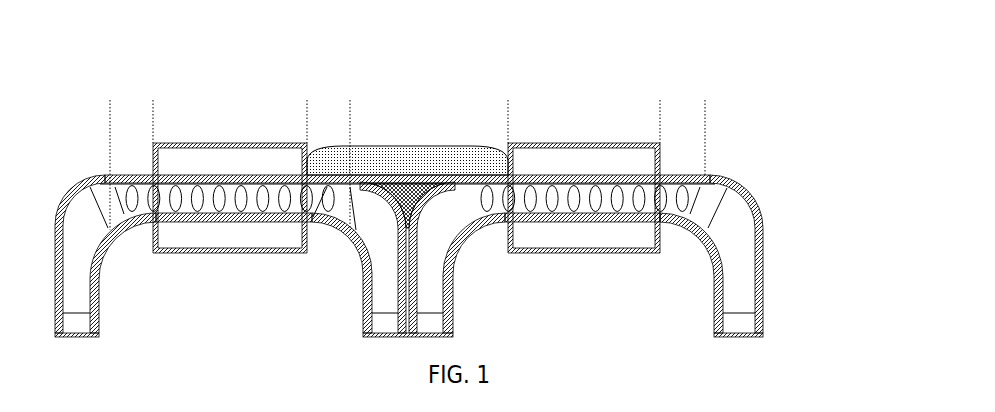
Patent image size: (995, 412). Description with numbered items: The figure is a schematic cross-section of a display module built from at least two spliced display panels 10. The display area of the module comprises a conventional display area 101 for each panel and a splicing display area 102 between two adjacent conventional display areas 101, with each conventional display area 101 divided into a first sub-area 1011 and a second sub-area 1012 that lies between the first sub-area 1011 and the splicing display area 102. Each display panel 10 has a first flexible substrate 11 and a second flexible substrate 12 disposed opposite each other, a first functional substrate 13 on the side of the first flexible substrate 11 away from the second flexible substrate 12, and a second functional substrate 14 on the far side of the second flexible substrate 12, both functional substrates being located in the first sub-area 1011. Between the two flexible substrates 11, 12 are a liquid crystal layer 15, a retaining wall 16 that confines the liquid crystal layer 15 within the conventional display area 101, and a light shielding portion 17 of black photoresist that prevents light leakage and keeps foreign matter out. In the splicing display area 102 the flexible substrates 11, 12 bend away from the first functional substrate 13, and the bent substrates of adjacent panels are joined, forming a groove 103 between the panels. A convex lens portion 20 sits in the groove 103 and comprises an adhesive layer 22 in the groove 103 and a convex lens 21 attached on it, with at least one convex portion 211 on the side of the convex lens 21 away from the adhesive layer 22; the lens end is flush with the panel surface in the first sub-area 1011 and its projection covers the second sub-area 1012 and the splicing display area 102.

The display panel 10 is at (830, 105).
The first flexible substrate 11 is at (722, 194).
The second flexible substrate 12 is at (712, 238).
The first functional substrate 13 is at (665, 158).
The second functional substrate 14 is at (705, 248).
The liquid crystal layer 15 is at (713, 172).
The retaining wall 16 is at (735, 188).
The light shielding portion 17 is at (744, 325).
The convex lens portion 20 is at (500, 33).
The convex lens 21 is at (400, 160).
The adhesive layer 22 is at (408, 178).
The convex portion 211 is at (387, 157).
The conventional display area 101 is at (207, 48).
The first sub-area 1011 is at (288, 115).
The second sub-area 1012 is at (335, 115).
The splicing display area 102 is at (373, 117).
The groove 103 is at (450, 240).